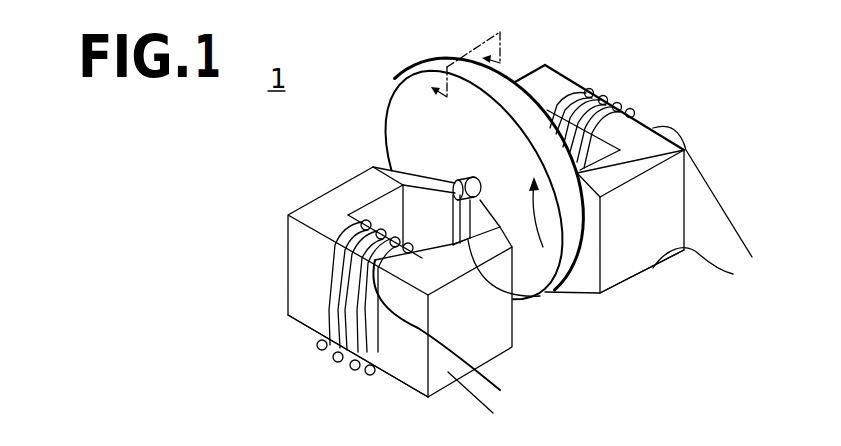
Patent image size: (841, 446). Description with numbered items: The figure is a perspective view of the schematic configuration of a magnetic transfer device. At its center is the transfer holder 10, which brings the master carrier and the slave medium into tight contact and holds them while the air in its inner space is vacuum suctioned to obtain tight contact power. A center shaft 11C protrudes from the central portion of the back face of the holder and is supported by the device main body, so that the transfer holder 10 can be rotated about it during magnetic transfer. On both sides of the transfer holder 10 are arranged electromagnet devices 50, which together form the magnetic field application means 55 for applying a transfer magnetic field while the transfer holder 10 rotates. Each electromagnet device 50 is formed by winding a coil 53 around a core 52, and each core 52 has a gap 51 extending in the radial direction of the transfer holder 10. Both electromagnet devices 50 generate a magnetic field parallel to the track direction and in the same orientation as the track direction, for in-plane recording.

The transfer holder 10 is at (388, 81).
The center shaft 11C is at (472, 180).
The electromagnet device 50 is at (298, 273).
The gap 51 is at (472, 232).
The core 52 is at (407, 378).
The coil 53 is at (341, 360).
The magnetic field application means 55 is at (620, 97).